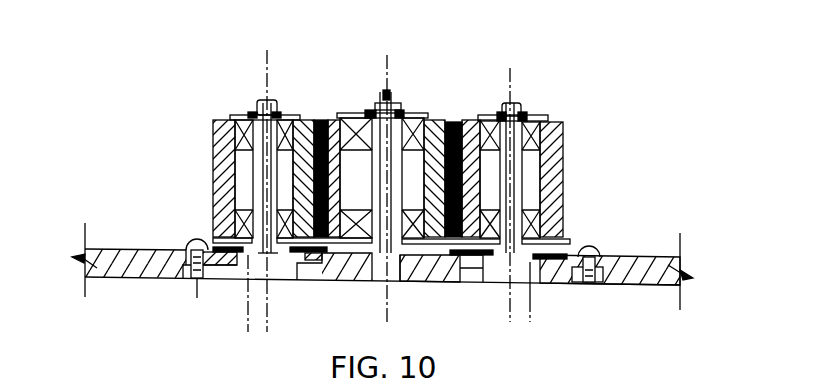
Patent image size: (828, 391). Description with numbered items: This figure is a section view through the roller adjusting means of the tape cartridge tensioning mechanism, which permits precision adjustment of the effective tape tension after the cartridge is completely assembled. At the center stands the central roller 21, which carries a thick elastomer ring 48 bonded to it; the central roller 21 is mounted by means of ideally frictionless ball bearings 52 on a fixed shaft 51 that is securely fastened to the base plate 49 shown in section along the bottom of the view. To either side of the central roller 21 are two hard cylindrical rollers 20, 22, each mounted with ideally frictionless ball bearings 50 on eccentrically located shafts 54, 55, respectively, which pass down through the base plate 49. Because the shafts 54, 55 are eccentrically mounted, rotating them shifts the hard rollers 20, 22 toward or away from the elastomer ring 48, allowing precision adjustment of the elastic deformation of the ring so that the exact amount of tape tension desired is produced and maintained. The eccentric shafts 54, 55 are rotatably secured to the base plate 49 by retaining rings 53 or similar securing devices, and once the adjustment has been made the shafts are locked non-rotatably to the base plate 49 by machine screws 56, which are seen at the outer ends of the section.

The hard cylindrical roller 20 is at (563, 155).
The central roller 21 is at (436, 138).
The hard cylindrical roller 22 is at (213, 166).
The elastomer ring 48 is at (455, 122).
The base plate 49 is at (633, 286).
The ball bearings 50 is at (299, 118).
The fixed shaft 51 is at (393, 95).
The ball bearings 52 is at (356, 116).
The retaining rings 53 is at (215, 238).
The eccentrically located shaft 54 is at (510, 272).
The eccentrically located shaft 55 is at (273, 258).
The machine screws 56 is at (197, 282).